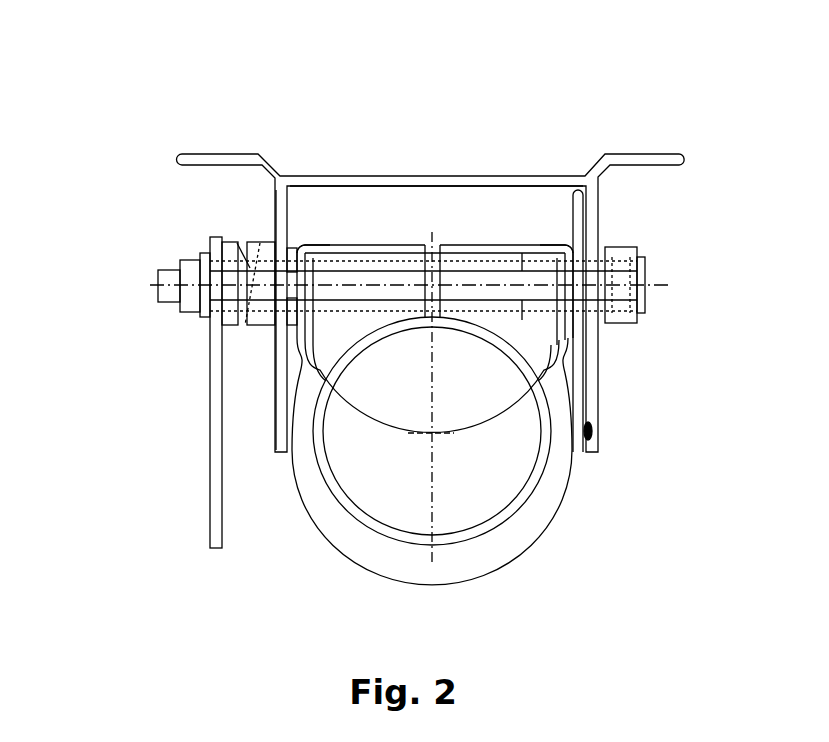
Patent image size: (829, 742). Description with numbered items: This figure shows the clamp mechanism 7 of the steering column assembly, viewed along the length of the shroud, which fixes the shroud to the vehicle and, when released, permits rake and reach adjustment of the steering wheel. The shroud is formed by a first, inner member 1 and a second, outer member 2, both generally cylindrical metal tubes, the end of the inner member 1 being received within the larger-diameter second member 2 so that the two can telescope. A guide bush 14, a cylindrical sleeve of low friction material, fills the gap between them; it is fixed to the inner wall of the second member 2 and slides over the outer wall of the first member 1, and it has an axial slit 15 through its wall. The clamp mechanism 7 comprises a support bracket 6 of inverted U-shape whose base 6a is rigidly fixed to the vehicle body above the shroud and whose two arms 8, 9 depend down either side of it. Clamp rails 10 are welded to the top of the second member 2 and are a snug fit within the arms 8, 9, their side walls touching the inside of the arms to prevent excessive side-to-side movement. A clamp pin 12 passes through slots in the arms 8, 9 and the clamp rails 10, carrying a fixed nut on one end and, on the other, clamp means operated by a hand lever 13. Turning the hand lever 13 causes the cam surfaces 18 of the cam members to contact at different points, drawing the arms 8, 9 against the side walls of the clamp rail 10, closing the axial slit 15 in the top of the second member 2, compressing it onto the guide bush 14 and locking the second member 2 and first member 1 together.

The first (inner) member 1 is at (480, 532).
The second (outer) member 2 is at (553, 483).
The support bracket 6 is at (462, 150).
The base 6a is at (433, 175).
The clamp mechanism 7 is at (158, 250).
The arm 8 is at (600, 407).
The arm 9 is at (278, 390).
The clamp rails 10 is at (315, 243).
The clamp pin 12 is at (525, 285).
The hand lever 13 is at (213, 478).
The guide bush 14 is at (525, 513).
The axial slit 15 is at (433, 310).
The cam surfaces 18 is at (257, 245).